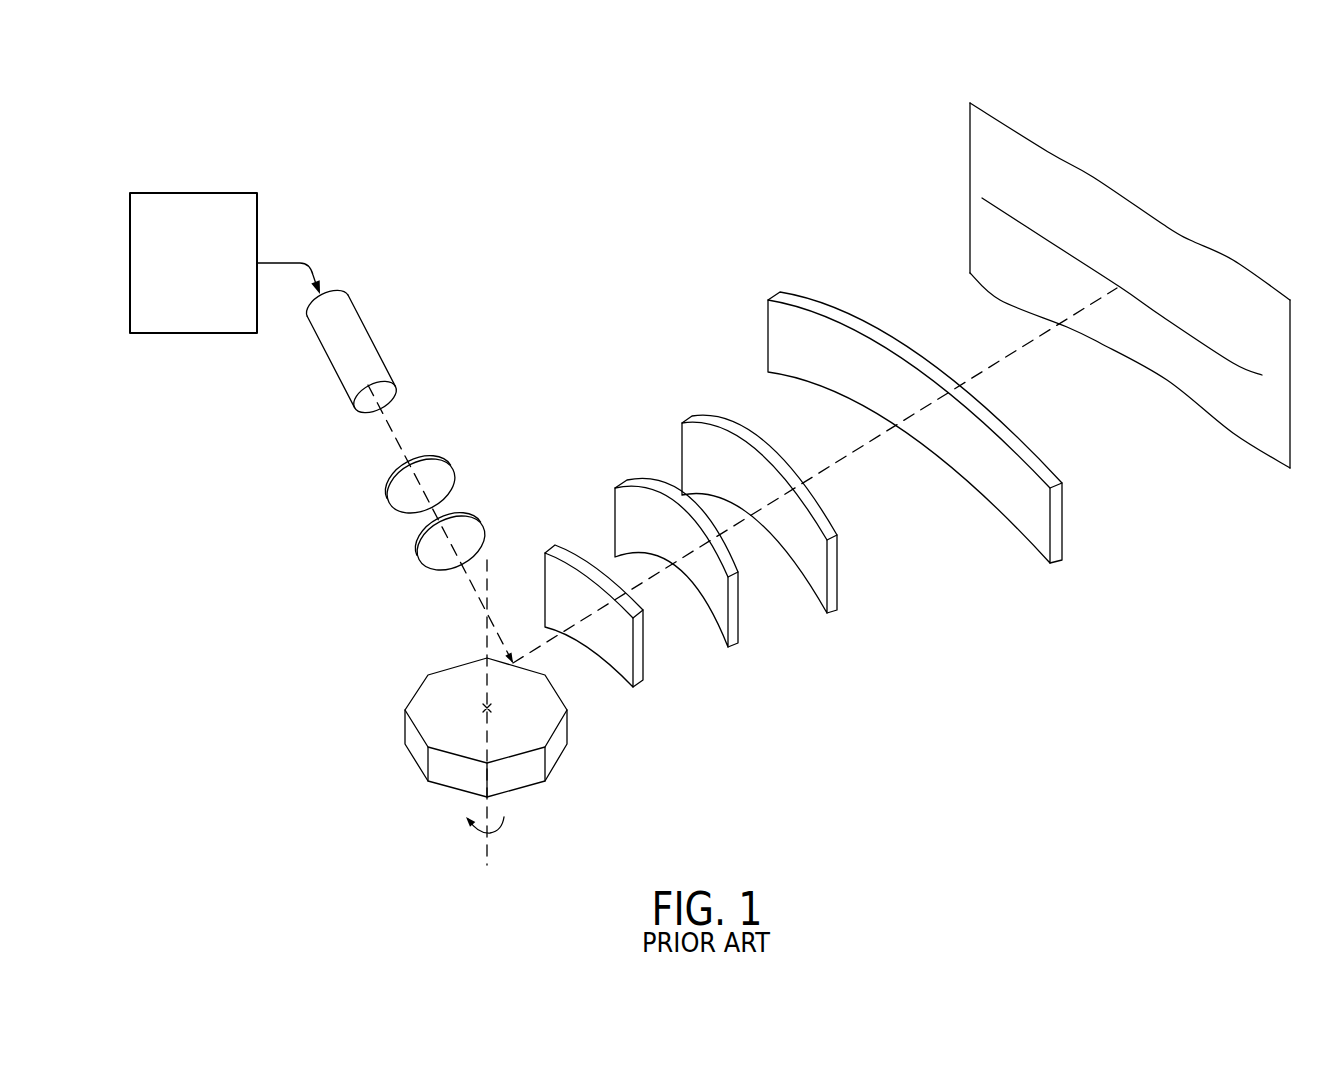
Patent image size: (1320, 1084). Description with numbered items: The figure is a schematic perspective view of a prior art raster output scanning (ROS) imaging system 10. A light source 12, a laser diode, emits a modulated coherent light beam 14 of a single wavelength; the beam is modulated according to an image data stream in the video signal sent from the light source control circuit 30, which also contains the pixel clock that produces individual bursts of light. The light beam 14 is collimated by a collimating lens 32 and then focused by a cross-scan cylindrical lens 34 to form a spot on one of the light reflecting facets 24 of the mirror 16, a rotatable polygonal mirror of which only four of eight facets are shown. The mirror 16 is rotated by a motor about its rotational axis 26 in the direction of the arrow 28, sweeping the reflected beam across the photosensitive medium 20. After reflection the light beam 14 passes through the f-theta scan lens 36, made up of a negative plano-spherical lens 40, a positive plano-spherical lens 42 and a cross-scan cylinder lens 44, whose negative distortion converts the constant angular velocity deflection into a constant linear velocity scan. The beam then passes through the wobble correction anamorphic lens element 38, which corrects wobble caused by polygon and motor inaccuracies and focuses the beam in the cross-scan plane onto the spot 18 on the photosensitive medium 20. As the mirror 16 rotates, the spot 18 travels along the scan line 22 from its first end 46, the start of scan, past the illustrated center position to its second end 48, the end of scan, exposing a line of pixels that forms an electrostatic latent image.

The ROS imaging system 10 is at (438, 134).
The light source 12 is at (362, 343).
The light beam 14 is at (387, 420).
The mirror 16 is at (414, 664).
The spot 18 is at (1117, 288).
The photosensitive medium 20 is at (1002, 137).
The scan line 22 is at (999, 195).
The light reflecting facets 24 is at (560, 688).
The rotational axis 26 is at (487, 656).
The arrow 28 is at (504, 828).
The light source control circuit 30 is at (217, 335).
The collimating lens 32 is at (400, 503).
The cross-scan cylindrical lens 34 is at (428, 562).
The f-theta scan lens 36 is at (698, 407).
The wobble correction anamorphic lens element 38 is at (1035, 535).
The negative plano-spherical lens 40 is at (637, 684).
The positive plano-spherical lens 42 is at (733, 650).
The cross-scan cylinder lens 44 is at (830, 617).
The first end of the scan line 46 is at (985, 200).
The second end of the scan line 48 is at (1262, 375).